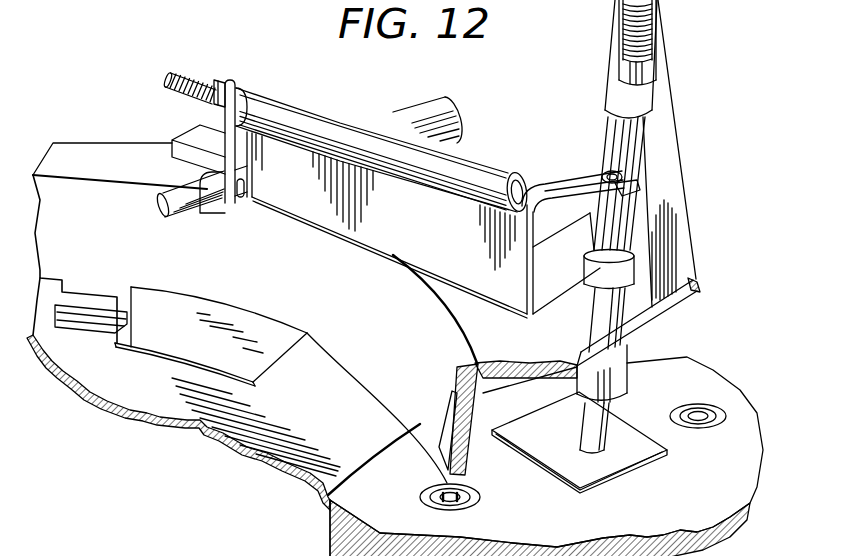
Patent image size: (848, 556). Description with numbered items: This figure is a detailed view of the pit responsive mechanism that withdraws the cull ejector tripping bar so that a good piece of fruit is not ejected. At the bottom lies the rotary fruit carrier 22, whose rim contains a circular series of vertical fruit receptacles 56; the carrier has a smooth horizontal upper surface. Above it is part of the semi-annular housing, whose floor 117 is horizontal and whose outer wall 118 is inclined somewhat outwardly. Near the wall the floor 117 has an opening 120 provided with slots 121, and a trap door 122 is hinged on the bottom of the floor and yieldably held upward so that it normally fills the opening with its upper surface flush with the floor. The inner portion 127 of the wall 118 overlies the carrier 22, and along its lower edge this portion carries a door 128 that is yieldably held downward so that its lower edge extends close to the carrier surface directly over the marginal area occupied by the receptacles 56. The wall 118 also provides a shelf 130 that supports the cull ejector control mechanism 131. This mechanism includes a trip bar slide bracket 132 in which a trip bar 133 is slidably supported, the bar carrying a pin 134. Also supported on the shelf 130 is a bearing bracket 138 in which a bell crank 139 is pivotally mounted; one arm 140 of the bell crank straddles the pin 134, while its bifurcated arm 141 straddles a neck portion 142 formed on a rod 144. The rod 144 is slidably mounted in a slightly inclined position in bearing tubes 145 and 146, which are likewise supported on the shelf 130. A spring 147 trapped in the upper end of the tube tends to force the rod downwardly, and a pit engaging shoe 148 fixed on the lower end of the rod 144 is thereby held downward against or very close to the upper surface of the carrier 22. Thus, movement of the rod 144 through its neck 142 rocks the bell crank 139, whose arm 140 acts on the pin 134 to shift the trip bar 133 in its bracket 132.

The rotary fruit carrier 22 is at (320, 539).
The vertical fruit receptacles 56 is at (422, 492).
The floor 117 is at (137, 393).
The outer wall 118 is at (400, 353).
The opening 120 is at (163, 350).
The slots 121 is at (78, 322).
The trap door 122 is at (190, 315).
The inner portion of the wall 127 is at (433, 430).
The door 128 is at (447, 453).
The shelf 130 is at (647, 325).
The cull ejector control mechanism 131 is at (298, 97).
The trip bar slide bracket 132 is at (383, 122).
The trip bar 133 is at (163, 208).
The pin 134 is at (241, 198).
The bearing bracket 138 is at (350, 220).
The bell crank 139 is at (553, 190).
The arm 140 is at (243, 160).
The bifurcated arm 141 is at (637, 182).
The neck portion 142 is at (623, 192).
The rod 144 is at (622, 128).
The bearing tube 145 is at (613, 53).
The bearing tube 146 is at (603, 297).
The spring 147 is at (632, 27).
The pit engaging shoe 148 is at (562, 482).